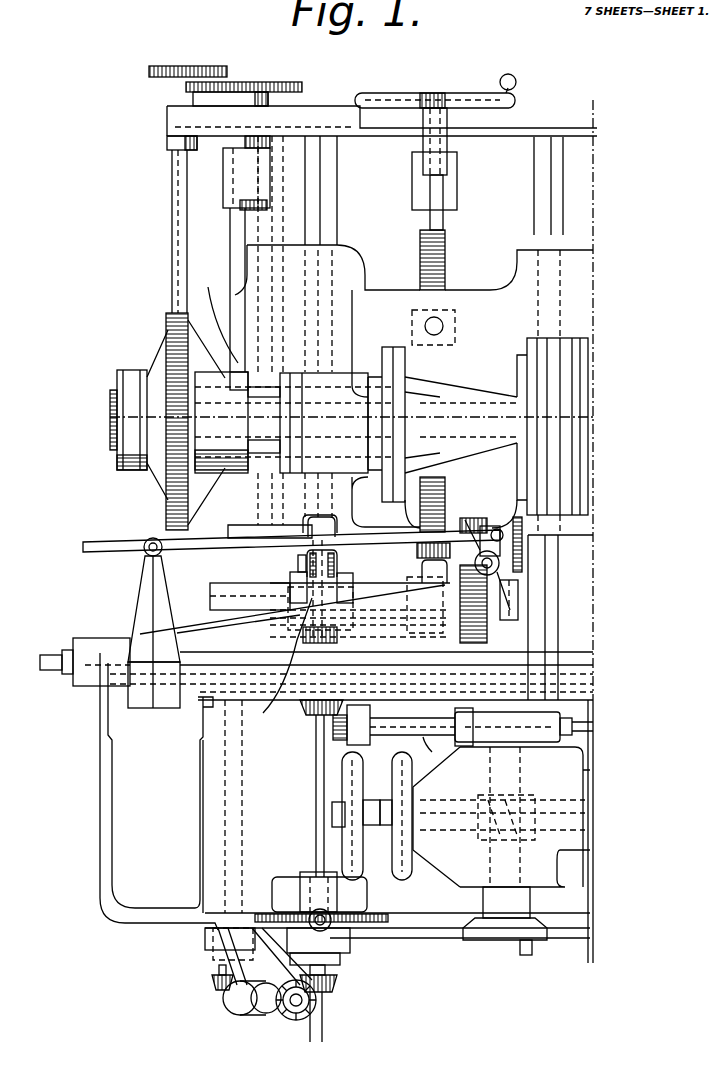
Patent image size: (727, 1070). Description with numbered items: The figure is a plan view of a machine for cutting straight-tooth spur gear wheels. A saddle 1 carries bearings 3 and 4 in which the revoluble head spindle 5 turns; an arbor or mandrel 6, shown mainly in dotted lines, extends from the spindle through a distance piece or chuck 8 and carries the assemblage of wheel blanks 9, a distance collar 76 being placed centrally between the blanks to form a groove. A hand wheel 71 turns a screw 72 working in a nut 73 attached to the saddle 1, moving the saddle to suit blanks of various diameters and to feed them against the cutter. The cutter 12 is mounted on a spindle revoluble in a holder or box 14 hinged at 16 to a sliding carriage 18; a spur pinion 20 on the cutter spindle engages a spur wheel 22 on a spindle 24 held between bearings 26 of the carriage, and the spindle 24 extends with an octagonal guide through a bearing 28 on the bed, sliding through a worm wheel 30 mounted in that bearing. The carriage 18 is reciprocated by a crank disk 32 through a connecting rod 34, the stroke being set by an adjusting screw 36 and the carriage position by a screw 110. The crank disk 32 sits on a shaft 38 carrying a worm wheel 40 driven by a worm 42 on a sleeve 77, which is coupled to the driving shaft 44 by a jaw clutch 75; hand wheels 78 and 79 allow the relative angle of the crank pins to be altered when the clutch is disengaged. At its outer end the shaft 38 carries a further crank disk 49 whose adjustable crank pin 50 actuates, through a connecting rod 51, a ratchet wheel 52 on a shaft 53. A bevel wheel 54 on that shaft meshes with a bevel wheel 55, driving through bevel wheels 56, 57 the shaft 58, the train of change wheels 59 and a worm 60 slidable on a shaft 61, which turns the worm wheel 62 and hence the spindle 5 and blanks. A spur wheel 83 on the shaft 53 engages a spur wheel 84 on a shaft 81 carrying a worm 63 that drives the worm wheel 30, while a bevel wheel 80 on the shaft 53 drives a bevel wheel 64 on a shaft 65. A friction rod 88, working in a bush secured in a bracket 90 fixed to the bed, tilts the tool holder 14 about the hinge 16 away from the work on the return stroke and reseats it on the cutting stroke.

The saddle 1 is at (491, 300).
The bearing 3 is at (295, 373).
The bearing 4 is at (386, 365).
The head spindle 5 is at (117, 434).
The arbor or mandrel 6 is at (490, 415).
The distance piece or chuck 8 is at (463, 388).
The wheel blanks 9 is at (574, 345).
The cutter 12 is at (523, 552).
The holder or box 14 is at (448, 525).
The hinge or pivot 16 is at (500, 575).
The sliding carriage 18 is at (560, 656).
The spur pinion 20 is at (472, 528).
The spur wheel 22 is at (500, 628).
The spindle 24 is at (212, 590).
The bearing 26 is at (490, 600).
The bearing 28 is at (291, 576).
The worm wheel 30 is at (342, 560).
The crank disk 32 is at (535, 725).
The connecting rod 34 is at (412, 719).
The adjusting screw 36 is at (452, 725).
The shaft 38 is at (525, 770).
The worm wheel 40 is at (563, 860).
The worm 42 is at (535, 860).
The shaft 44 is at (332, 813).
The crank disk 49 is at (540, 940).
The adjustable crank pin 50 is at (520, 950).
The connecting rod 51 is at (442, 940).
The ratchet wheel 52 is at (355, 925).
The shaft 53 is at (316, 784).
The bevel wheel 54 is at (336, 987).
The bevel wheel 55 is at (295, 1020).
The bevel wheel 56 is at (238, 1012).
The bevel wheel 57 is at (214, 984).
The shaft 58 is at (237, 226).
The train of change wheels 59 is at (228, 71).
The worm 60 is at (118, 411).
The shaft 61 is at (170, 229).
The worm wheel 62 is at (164, 325).
The worm 63 is at (356, 577).
The bevel wheel 64 is at (334, 738).
The shaft 65 is at (427, 745).
The hand wheel 71 is at (460, 99).
The screw 72 is at (447, 255).
The nut 73 is at (445, 310).
The jaw clutch 75 is at (384, 872).
The distance collar 76 is at (590, 502).
The sleeve 77 is at (425, 858).
The hand wheel 78 is at (396, 766).
The hand wheel 79 is at (342, 846).
The bevel wheel 80 is at (312, 716).
The shaft 81 is at (225, 622).
The spur wheel 83 is at (335, 645).
The spur wheel 84 is at (284, 662).
The friction rod 88 is at (106, 542).
The bracket 90 is at (140, 600).
The screw 110 is at (52, 672).